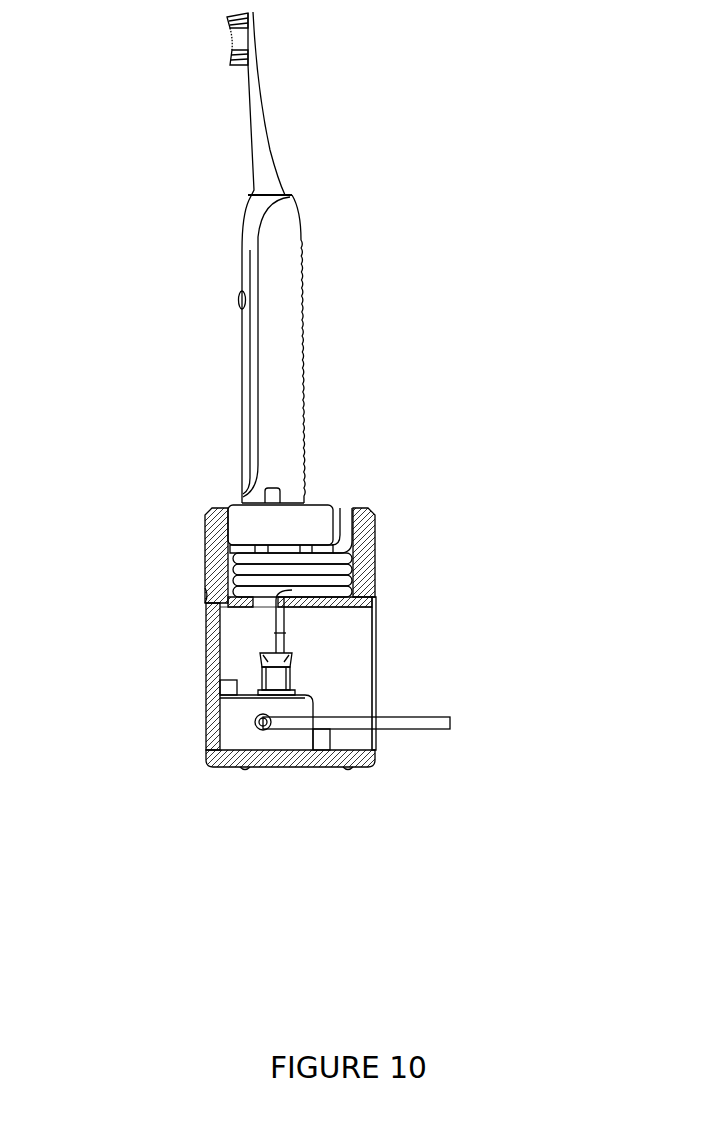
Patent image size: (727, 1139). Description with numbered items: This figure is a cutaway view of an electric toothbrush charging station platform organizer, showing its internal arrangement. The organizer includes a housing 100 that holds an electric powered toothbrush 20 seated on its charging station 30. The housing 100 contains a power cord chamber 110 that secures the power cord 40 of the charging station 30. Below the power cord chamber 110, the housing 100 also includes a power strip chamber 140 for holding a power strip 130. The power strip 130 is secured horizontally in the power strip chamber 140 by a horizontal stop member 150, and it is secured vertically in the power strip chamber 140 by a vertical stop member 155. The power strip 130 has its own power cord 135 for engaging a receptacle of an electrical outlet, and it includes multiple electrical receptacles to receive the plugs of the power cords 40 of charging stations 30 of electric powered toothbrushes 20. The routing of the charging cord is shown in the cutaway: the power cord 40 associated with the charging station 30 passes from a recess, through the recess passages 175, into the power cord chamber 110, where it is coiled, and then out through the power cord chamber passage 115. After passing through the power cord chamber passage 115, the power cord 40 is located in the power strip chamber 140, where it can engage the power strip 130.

The electric powered toothbrush 20 is at (295, 202).
The charging station 30 is at (308, 527).
The power cord 40 is at (285, 565).
The housing 100 is at (220, 542).
The power cord chamber 110 is at (383, 565).
The power cord chamber passage 115 is at (262, 598).
The power strip 130 is at (313, 700).
The power cord 135 is at (333, 727).
The power strip chamber 140 is at (320, 655).
The horizontal stop member 150 is at (328, 740).
The vertical stop member 155 is at (220, 685).
The recess passages 175 is at (338, 552).